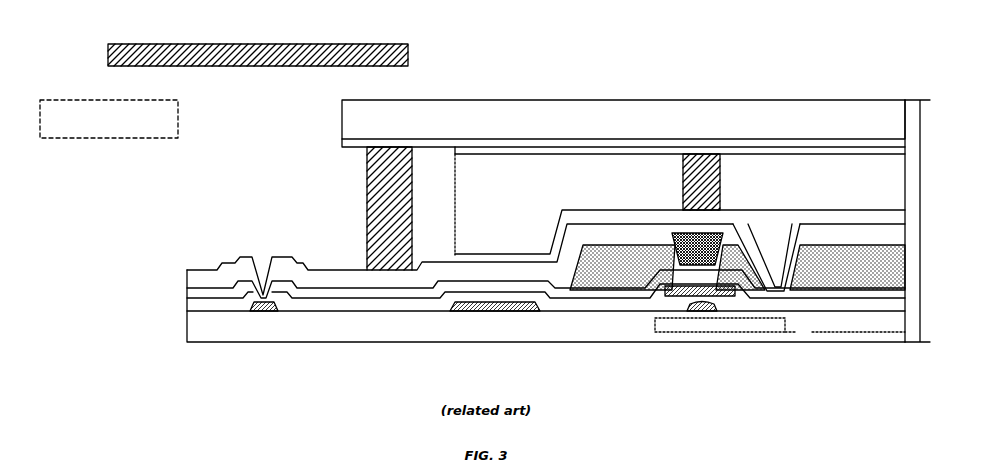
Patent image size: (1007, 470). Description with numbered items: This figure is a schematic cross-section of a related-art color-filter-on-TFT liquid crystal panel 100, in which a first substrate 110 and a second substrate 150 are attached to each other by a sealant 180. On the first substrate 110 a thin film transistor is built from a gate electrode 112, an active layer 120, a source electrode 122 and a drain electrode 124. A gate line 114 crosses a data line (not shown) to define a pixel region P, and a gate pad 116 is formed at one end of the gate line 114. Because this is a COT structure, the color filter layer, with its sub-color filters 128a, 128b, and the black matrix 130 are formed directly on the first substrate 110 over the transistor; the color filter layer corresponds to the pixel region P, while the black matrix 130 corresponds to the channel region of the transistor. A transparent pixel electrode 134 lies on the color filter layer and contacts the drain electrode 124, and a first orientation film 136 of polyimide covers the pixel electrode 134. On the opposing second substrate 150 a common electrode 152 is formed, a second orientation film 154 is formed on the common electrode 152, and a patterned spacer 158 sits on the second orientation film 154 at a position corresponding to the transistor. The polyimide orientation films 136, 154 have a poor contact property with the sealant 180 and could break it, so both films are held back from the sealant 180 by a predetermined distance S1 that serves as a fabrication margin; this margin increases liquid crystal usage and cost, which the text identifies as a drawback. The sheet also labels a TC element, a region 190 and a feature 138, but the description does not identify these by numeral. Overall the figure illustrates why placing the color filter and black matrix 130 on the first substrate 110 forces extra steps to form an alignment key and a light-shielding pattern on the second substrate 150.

The touch controller / touch sensing layer TC is at (410, 58).
The second substrate 150 is at (178, 124).
The upper substrate 190 is at (623, 119).
The common electrode 152 is at (470, 150).
The second orientation film 154 is at (525, 156).
The patterned spacer 158 is at (690, 178).
The sealant 180 is at (367, 196).
The predetermined distance S1 is at (449, 234).
The contact spacer / conductive pillar 138 is at (721, 180).
The first orientation film 136 is at (568, 209).
The transparent pixel electrode 134 is at (866, 224).
The drain electrode 124 is at (777, 292).
The red sub-color filter 128a is at (604, 244).
The green sub-color filter 128b is at (818, 243).
The black matrix 130 is at (686, 232).
The pixel region P is at (546, 299).
The source electrode 122 is at (645, 297).
The gate electrode 112 is at (693, 305).
The first substrate 110 is at (546, 323).
The gate pad 116 is at (262, 312).
The gate line 114 is at (495, 312).
The active layer 120 is at (727, 303).
The COT type liquid crystal panel 100 is at (923, 221).